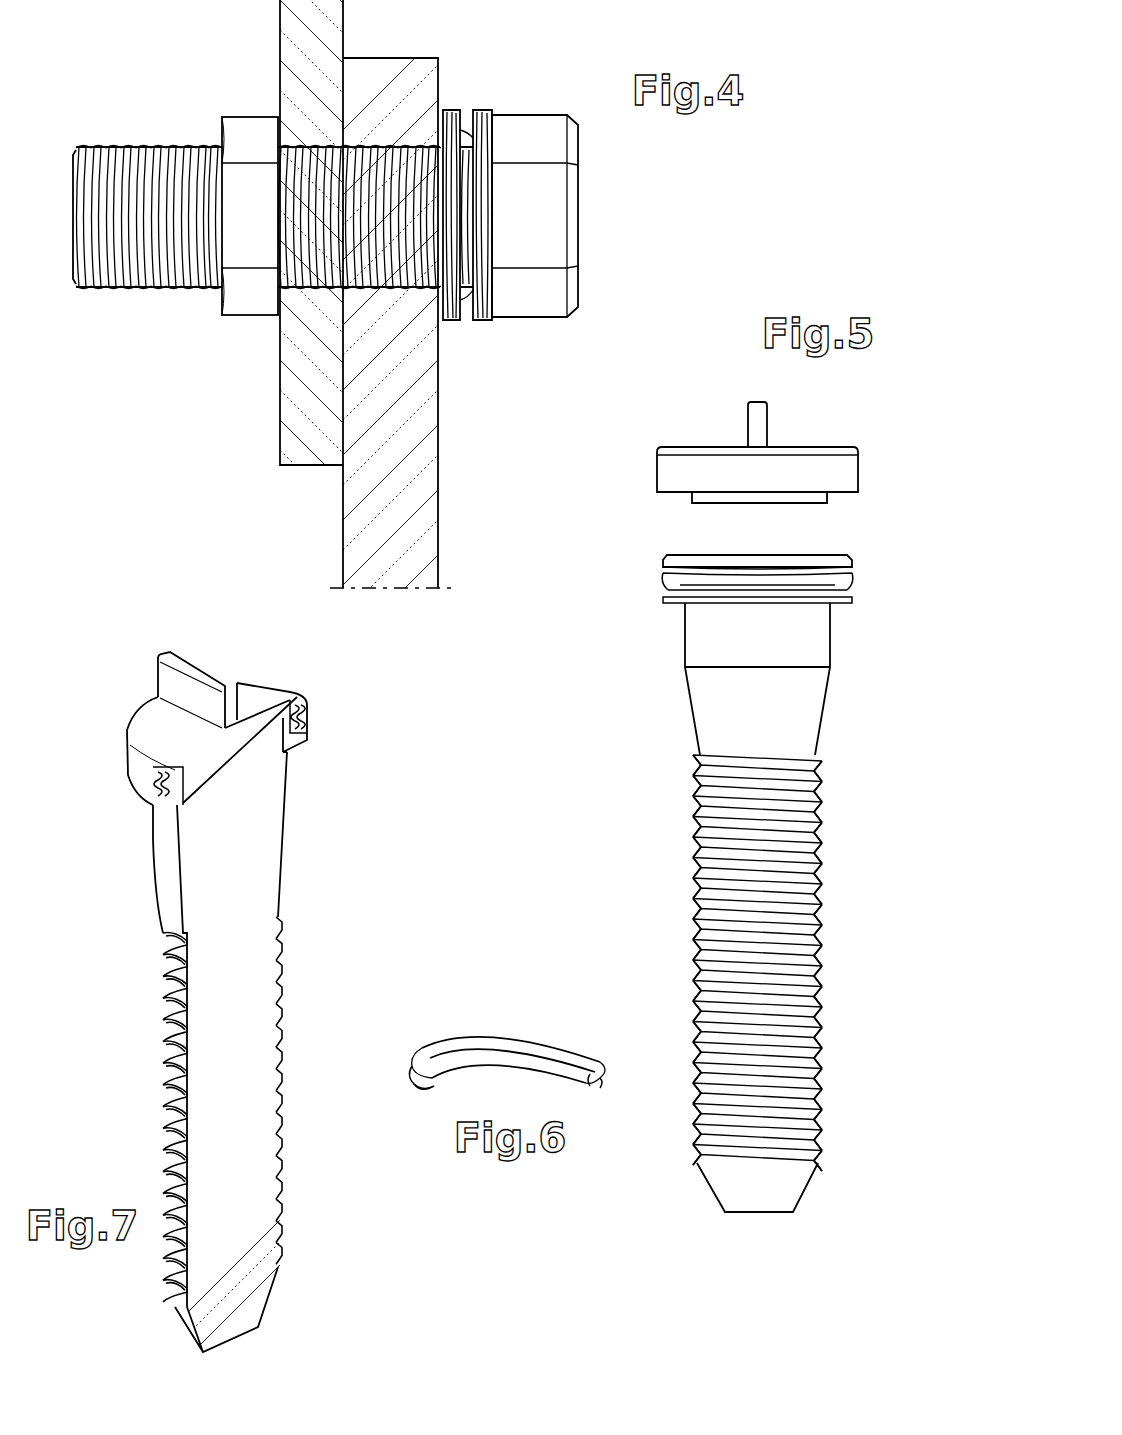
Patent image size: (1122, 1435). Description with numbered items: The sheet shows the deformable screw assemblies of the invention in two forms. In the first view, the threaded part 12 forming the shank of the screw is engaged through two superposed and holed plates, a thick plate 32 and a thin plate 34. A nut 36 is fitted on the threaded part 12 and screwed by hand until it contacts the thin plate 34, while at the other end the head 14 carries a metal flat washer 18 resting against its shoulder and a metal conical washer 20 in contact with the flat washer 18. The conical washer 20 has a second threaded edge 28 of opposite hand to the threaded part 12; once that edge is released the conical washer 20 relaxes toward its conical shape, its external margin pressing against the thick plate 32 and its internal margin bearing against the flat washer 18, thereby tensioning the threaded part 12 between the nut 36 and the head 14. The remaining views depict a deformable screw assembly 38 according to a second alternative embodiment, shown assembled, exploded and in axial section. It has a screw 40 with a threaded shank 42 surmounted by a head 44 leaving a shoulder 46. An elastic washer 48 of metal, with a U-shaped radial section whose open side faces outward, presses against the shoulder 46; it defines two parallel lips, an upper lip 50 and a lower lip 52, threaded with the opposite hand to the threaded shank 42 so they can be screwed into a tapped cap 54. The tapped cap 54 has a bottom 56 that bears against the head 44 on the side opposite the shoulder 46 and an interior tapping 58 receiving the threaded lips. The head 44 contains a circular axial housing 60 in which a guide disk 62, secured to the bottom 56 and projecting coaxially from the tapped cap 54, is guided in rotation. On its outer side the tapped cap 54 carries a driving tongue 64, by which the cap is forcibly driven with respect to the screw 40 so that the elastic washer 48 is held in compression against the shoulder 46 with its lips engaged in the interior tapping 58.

In FIG. 4, the threaded part 12 is at (150, 150).
In FIG. 4, the head 14 is at (550, 226).
In FIG. 4, the flat washer 18 is at (478, 110).
In FIG. 4, the conical washer 20 is at (450, 300).
In FIG. 4, the second threaded edge 28 is at (447, 110).
In FIG. 4, the thick plate 32 is at (415, 468).
In FIG. 4, the thin plate 34 is at (288, 48).
In FIG. 4, the nut 36 is at (248, 296).
In FIG. 5, the deformable screw assembly 38 is at (618, 722).
In FIG. 5, the screw 40 is at (660, 862).
In FIG. 7, the screw 40 is at (320, 880).
In FIG. 5, the threaded shank 42 is at (695, 830).
In FIG. 5, the head 44 is at (692, 556).
In FIG. 5, the shoulder 46 is at (773, 575).
In FIG. 7, the shoulder 46 is at (297, 720).
In FIG. 5, the elastic washer 48 is at (712, 592).
In FIG. 6, the elastic washer 48 is at (470, 1030).
In FIG. 7, the elastic washer 48 is at (170, 806).
In FIG. 6, the upper lip 50 is at (407, 1072).
In FIG. 6, the lower lip 52 is at (418, 1085).
In FIG. 5, the tapped cap 54 is at (820, 462).
In FIG. 7, the tapped cap 54 is at (267, 682).
In FIG. 7, the bottom 56 is at (158, 782).
In FIG. 7, the interior tapping 58 is at (298, 700).
In FIG. 5, the circular axial housing 60 is at (830, 548).
In FIG. 7, the circular axial housing 60 is at (197, 763).
In FIG. 5, the guide disk 62 is at (740, 503).
In FIG. 7, the guide disk 62 is at (240, 750).
In FIG. 5, the driving tongue 64 is at (750, 445).
In FIG. 7, the driving tongue 64 is at (187, 670).